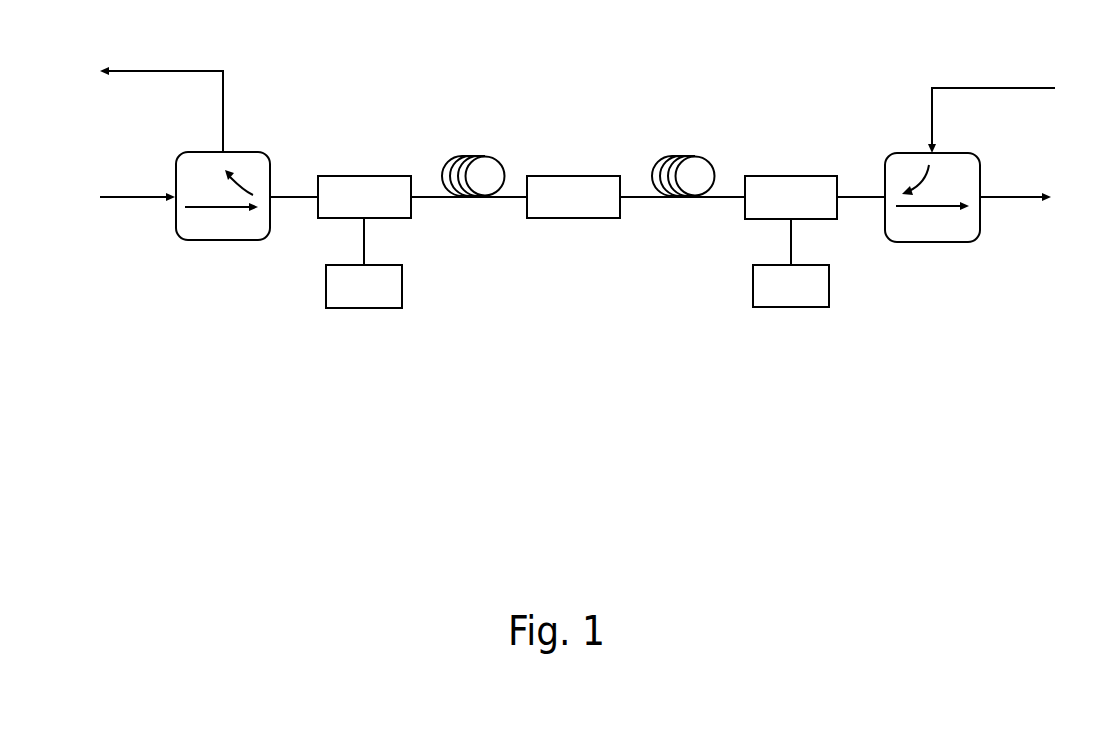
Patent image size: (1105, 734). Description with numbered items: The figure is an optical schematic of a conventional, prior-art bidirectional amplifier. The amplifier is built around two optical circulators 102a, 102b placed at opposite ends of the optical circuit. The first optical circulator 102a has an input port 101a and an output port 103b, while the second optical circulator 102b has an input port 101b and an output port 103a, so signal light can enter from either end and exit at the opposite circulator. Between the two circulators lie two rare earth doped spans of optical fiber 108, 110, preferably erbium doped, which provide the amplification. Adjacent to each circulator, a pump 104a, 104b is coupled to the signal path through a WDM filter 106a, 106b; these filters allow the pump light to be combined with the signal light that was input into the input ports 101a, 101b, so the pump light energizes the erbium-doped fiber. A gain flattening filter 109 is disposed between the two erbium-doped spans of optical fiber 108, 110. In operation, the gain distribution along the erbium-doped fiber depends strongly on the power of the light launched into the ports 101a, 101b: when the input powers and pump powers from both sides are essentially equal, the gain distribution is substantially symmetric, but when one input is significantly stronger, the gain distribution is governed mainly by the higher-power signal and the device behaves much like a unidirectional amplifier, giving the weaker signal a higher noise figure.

The input port 101a is at (141, 201).
The input port 101b is at (985, 86).
The optical circulator 102a is at (242, 243).
The optical circulator 102b is at (943, 228).
The output port 103a is at (1033, 200).
The output port 103b is at (226, 112).
The pump 104a is at (372, 310).
The pump 104b is at (803, 309).
The WDM filter 106a is at (372, 174).
The WDM filter 106b is at (803, 174).
The rare earth doped span of optical fiber 108 is at (477, 152).
The gain flattening filter 109 is at (575, 222).
The rare earth doped span of optical fiber 110 is at (685, 152).